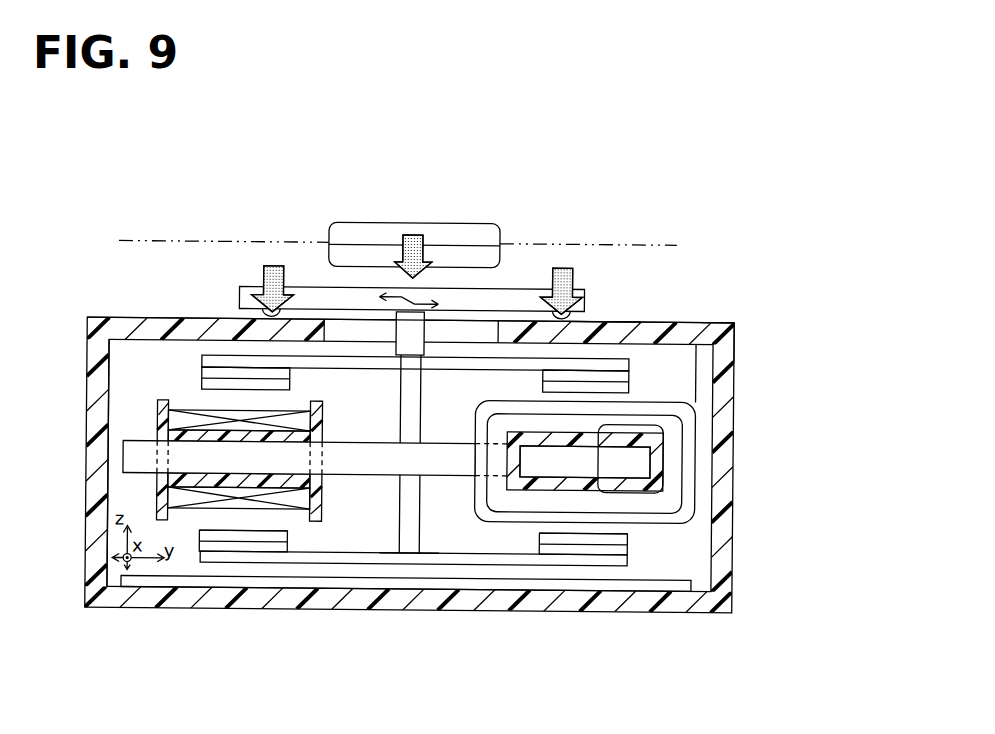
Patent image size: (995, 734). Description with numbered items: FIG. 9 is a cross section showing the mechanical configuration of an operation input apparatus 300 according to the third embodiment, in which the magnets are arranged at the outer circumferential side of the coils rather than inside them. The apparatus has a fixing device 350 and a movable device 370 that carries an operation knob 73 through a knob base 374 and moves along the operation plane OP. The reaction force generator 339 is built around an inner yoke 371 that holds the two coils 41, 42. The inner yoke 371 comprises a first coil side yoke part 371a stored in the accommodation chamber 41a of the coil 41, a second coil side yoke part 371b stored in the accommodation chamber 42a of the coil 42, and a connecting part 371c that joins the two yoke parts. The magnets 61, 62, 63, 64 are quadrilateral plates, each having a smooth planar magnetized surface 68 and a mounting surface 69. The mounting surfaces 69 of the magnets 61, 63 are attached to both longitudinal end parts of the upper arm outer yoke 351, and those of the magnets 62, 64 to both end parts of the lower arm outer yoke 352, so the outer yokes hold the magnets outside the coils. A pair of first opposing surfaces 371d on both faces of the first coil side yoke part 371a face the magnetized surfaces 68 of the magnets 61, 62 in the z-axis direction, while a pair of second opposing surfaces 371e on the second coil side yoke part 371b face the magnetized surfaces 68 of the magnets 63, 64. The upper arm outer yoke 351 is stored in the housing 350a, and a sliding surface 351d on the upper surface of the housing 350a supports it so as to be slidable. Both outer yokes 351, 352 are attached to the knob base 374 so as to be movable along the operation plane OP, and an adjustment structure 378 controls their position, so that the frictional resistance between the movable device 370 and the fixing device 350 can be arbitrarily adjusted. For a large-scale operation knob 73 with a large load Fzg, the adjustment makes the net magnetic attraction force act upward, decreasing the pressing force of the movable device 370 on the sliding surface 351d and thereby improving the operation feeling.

The operation input apparatus 300 is at (684, 205).
The fixing device 350 is at (92, 611).
The housing 350a is at (731, 320).
The upper arm outer yoke 351 is at (147, 340).
The sliding surface 351d is at (598, 320).
The reaction force generator 339 is at (699, 359).
The movable device 370 is at (370, 223).
The knob base 374 is at (422, 406).
The operation knob 73 is at (489, 223).
The adjustment structure 378 is at (400, 333).
The inner yoke 371 is at (383, 478).
The first coil side yoke part 371a is at (614, 473).
The second coil side yoke part 371b is at (158, 497).
The connecting part 371c is at (430, 465).
The first opposing surfaces 371d is at (600, 423).
The second opposing surfaces 371e is at (168, 427).
The coil 41 is at (661, 401).
The accommodation chamber 41a is at (655, 455).
The coil 42 is at (186, 412).
The accommodation chamber 42a is at (160, 468).
The magnet 61 is at (633, 385).
The magnet 62 is at (543, 543).
The magnet 63 is at (201, 384).
The magnet 64 is at (200, 532).
The magnetized surface 68 is at (548, 396).
The mounting surface 69 is at (217, 363).
The lower arm outer yoke 352 is at (261, 560).
The load Fzg is at (403, 236).
The operation plane OP is at (141, 243).